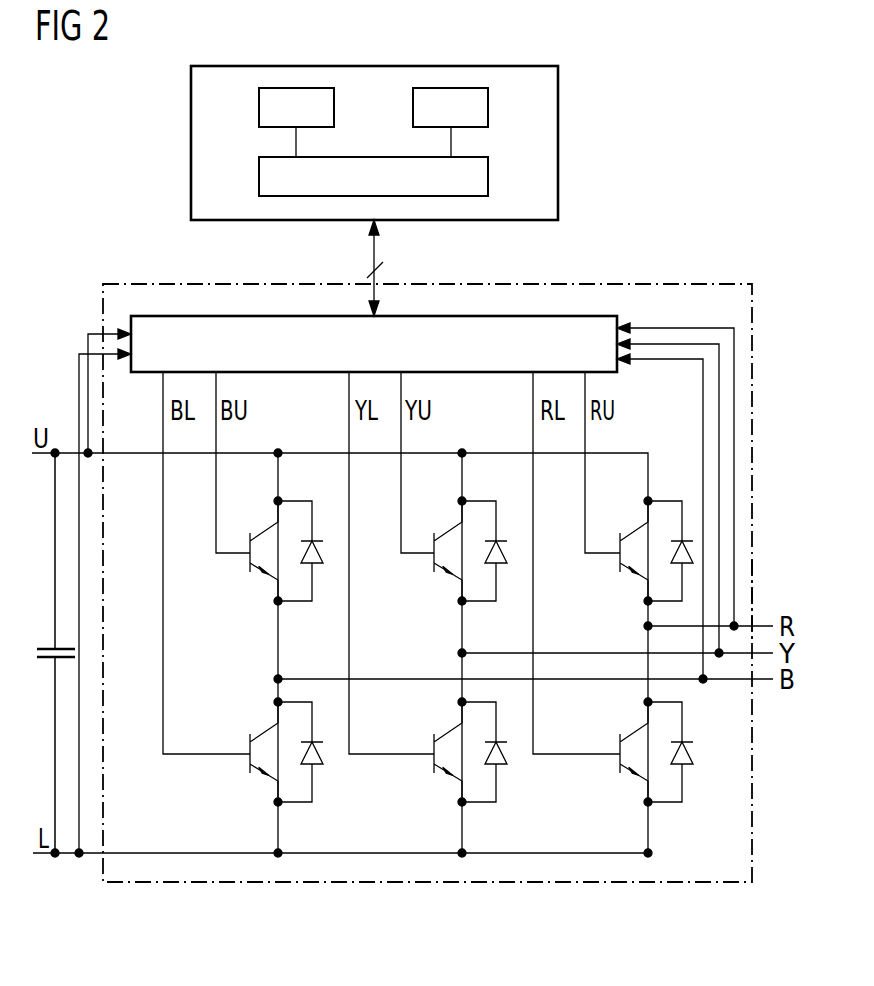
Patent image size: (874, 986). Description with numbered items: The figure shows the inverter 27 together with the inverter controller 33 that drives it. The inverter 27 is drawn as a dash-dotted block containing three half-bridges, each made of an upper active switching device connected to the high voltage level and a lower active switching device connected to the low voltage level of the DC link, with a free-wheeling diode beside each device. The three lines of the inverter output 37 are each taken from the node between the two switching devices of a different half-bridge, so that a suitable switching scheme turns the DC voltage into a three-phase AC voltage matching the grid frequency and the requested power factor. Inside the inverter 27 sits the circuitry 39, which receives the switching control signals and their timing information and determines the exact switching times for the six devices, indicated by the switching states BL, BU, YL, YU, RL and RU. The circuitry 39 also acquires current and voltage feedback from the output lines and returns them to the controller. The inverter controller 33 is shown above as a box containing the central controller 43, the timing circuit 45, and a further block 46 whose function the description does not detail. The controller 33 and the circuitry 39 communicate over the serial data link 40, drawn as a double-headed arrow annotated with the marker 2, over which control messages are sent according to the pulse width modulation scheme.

The inverter controller 33 is at (558, 142).
The memory module 46 is at (259, 107).
The timing circuit 45 is at (488, 107).
The central controller 43 is at (488, 177).
The serial data link 40 is at (372, 253).
The bus marker 2 is at (383, 264).
The inverter 27 is at (408, 882).
The circuitry 39 is at (465, 372).
The inverter output 37 is at (762, 600).